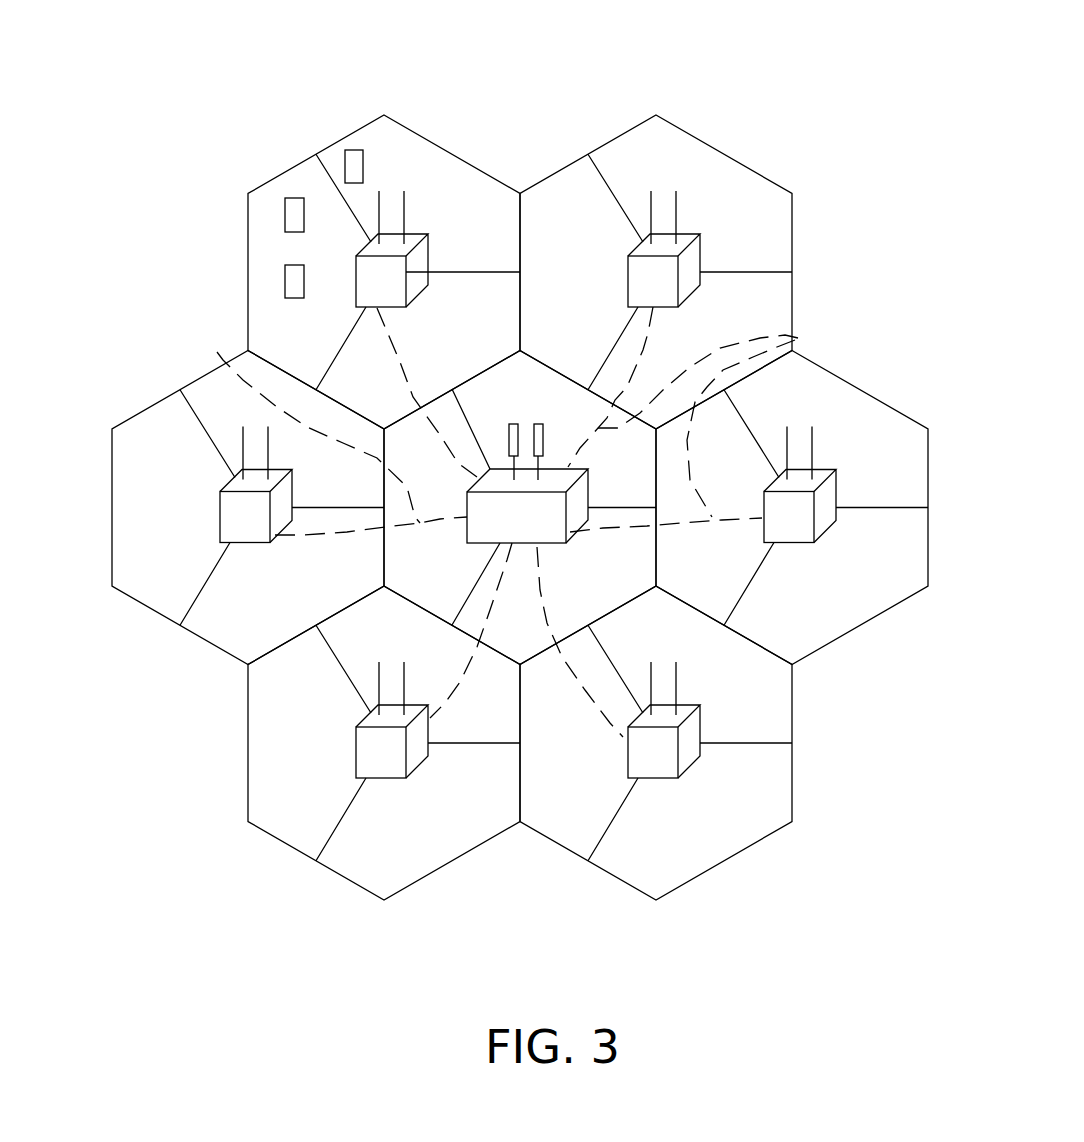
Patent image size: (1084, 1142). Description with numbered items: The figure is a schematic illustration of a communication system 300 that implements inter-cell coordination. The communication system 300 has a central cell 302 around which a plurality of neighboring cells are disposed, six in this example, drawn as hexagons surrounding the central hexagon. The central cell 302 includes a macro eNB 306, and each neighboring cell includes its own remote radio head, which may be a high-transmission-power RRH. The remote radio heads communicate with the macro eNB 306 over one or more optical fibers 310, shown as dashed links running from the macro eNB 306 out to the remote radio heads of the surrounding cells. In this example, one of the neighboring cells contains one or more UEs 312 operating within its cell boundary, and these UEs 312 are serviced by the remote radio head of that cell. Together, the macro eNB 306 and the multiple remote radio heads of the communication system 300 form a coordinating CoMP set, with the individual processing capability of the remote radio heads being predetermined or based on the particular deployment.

The communication system 300 is at (828, 85).
The central cell 302 is at (545, 411).
The macro eNB 306 is at (540, 529).
The optical fibers 310 is at (217, 352).
The UEs 312 is at (285, 275).